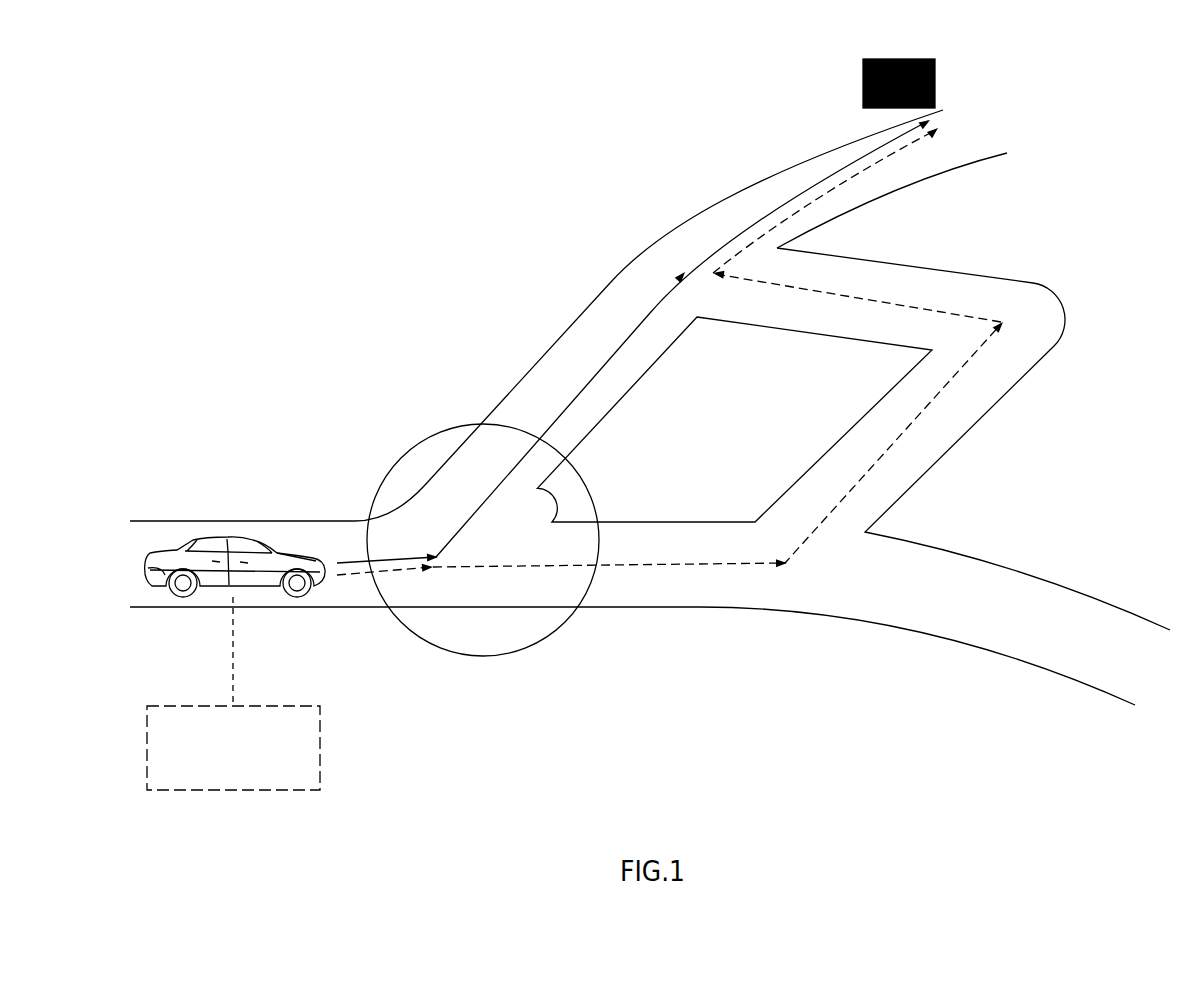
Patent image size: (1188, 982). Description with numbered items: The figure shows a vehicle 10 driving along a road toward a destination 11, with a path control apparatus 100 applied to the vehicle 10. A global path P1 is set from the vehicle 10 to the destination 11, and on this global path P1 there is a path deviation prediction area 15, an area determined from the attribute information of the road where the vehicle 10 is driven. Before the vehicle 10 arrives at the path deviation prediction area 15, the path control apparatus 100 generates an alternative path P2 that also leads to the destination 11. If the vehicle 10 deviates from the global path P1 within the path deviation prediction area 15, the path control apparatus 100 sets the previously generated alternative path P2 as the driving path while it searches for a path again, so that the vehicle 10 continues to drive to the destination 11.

The vehicle 10 is at (222, 537).
The destination 11 is at (935, 82).
The path deviation prediction area 15 is at (427, 437).
The path control apparatus 100 is at (322, 748).
The global path P1 is at (600, 353).
The alternative path P2 is at (672, 565).